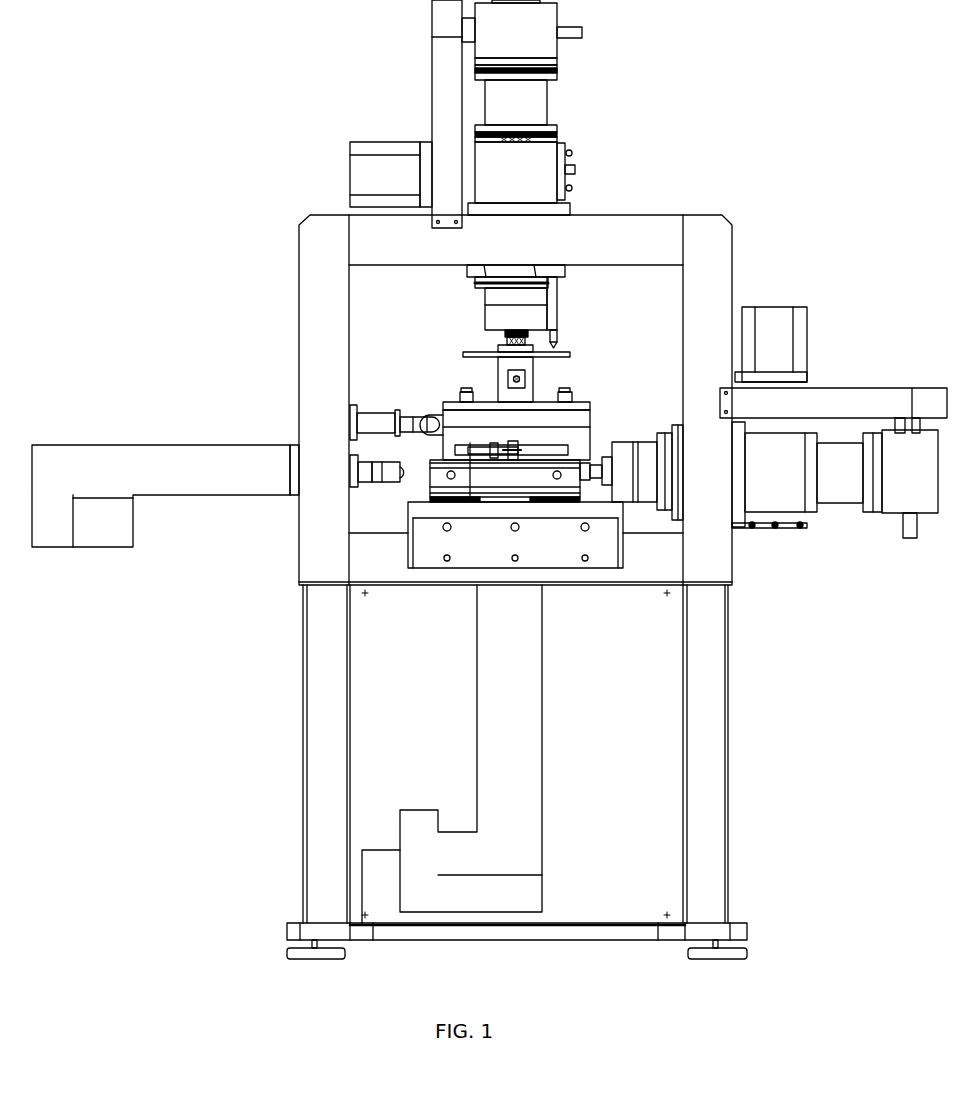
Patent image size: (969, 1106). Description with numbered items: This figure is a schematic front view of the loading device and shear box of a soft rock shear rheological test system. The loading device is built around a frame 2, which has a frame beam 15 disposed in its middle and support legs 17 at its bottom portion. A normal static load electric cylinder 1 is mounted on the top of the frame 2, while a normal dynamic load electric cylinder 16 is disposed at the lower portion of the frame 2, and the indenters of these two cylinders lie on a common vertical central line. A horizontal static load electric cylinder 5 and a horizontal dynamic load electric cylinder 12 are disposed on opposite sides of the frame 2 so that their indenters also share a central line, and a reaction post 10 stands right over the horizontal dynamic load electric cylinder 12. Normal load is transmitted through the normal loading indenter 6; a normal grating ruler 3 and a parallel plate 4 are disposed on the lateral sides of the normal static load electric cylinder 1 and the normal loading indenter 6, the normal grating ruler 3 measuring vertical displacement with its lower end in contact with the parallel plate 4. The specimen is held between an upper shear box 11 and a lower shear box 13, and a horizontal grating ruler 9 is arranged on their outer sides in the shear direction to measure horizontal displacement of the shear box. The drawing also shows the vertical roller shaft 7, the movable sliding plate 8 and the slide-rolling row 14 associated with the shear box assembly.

The normal static load electric cylinder 1 is at (517, 107).
The frame 2 is at (580, 237).
The normal grating ruler 3 is at (549, 307).
The parallel plate 4 is at (564, 353).
The horizontal static load electric cylinder 5 is at (778, 470).
The normal loading indenter 6 is at (508, 363).
The vertical roller shaft 7 is at (461, 391).
The movable sliding plate 8 is at (452, 403).
The horizontal grating ruler 9 is at (550, 440).
The reaction post 10 is at (382, 423).
The upper shear box 11 is at (440, 440).
The horizontal dynamic load electric cylinder 12 is at (385, 470).
The lower shear box 13 is at (582, 490).
The slide-rolling row 14 is at (583, 500).
The frame beam 15 is at (660, 560).
The normal dynamic load electric cylinder 16 is at (507, 712).
The support leg 17 is at (742, 948).